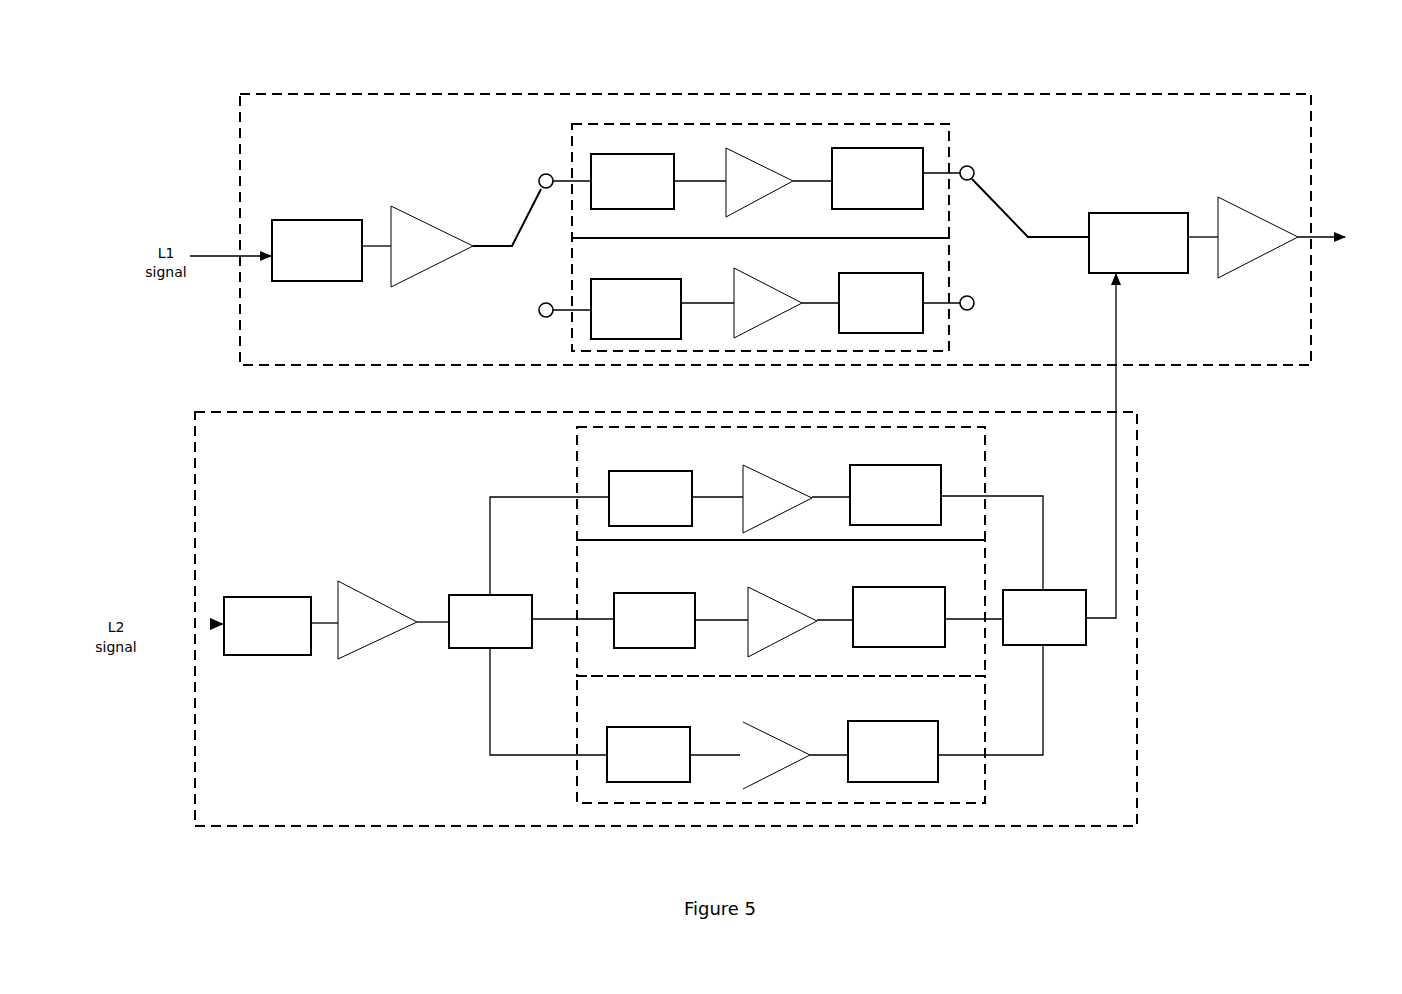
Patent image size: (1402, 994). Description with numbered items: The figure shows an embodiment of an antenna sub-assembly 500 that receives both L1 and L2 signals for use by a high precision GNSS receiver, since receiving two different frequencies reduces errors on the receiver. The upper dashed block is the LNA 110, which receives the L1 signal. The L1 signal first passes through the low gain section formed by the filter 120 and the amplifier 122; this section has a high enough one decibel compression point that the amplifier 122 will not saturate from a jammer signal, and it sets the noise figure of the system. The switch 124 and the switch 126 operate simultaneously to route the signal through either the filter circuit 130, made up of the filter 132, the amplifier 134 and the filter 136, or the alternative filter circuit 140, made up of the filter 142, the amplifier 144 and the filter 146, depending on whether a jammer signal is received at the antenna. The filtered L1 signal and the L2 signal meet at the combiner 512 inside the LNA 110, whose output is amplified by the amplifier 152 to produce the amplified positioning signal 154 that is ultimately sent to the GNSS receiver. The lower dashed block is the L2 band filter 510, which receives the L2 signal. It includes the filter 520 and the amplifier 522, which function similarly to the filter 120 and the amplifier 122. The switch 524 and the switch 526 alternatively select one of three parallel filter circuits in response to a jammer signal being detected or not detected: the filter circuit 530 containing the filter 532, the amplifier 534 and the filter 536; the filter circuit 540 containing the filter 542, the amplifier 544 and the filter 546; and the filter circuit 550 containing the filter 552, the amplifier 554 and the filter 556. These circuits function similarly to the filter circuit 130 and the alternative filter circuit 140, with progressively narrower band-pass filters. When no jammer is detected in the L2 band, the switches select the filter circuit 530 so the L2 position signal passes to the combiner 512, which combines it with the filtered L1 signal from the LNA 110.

The antenna sub-assembly 500 is at (170, 32).
The LNA 110 is at (775, 229).
The filter 120 is at (317, 250).
The amplifier 122 is at (432, 246).
The switch 124 is at (513, 241).
The filter circuit 130 is at (760, 181).
The filter 132 is at (632, 181).
The amplifier 134 is at (759, 182).
The filter 136 is at (877, 178).
The alternative filter circuit 140 is at (760, 294).
The filter 142 is at (636, 309).
The amplifier 144 is at (768, 303).
The filter 146 is at (881, 303).
The switch 126 is at (1024, 237).
The combiner 512 is at (1138, 243).
The amplifier 152 is at (1258, 237).
The amplified positioning signal 154 is at (1344, 256).
The L2 band filter 510 is at (666, 619).
The filter 520 is at (267, 626).
The amplifier 522 is at (377, 620).
The switch 524 is at (490, 621).
The filter circuit 530 is at (781, 483).
The filter 532 is at (650, 498).
The amplifier 534 is at (777, 499).
The filter 536 is at (895, 495).
The filter circuit 540 is at (781, 608).
The filter 542 is at (654, 620).
The amplifier 544 is at (782, 622).
The filter 546 is at (899, 617).
The filter circuit 550 is at (781, 739).
The filter 552 is at (648, 754).
The amplifier 554 is at (776, 755).
The filter 556 is at (893, 751).
The switch 526 is at (1044, 617).